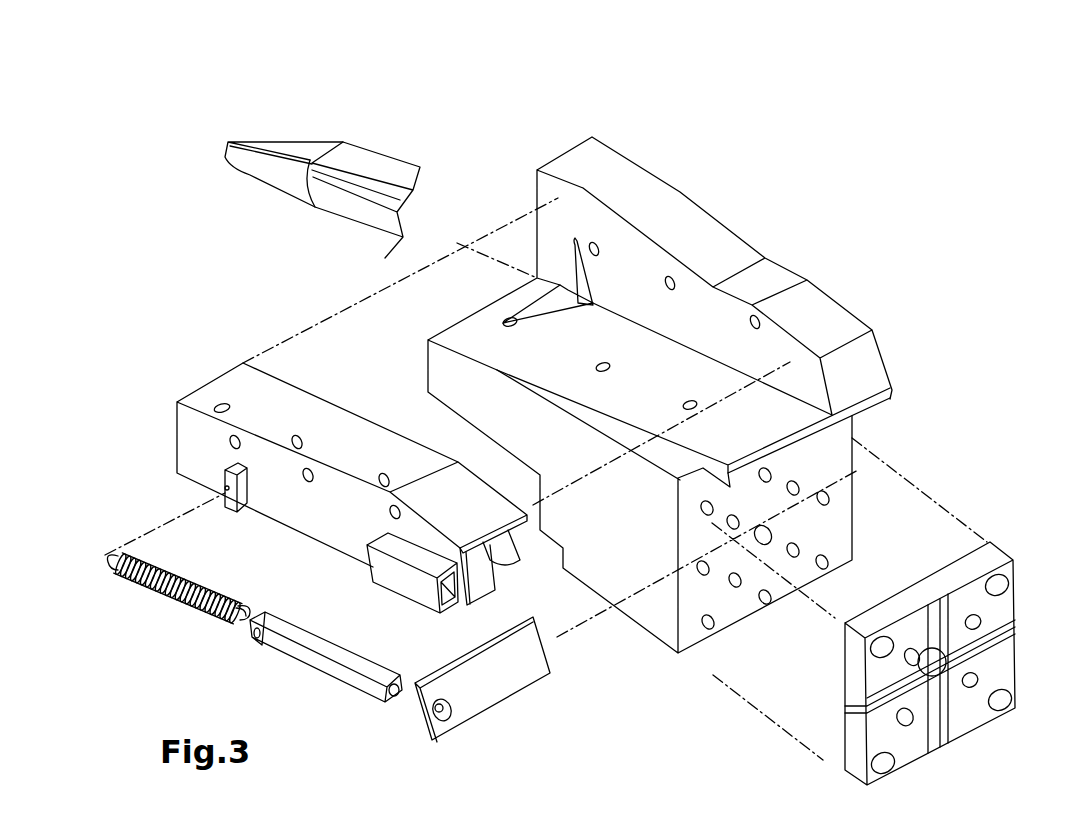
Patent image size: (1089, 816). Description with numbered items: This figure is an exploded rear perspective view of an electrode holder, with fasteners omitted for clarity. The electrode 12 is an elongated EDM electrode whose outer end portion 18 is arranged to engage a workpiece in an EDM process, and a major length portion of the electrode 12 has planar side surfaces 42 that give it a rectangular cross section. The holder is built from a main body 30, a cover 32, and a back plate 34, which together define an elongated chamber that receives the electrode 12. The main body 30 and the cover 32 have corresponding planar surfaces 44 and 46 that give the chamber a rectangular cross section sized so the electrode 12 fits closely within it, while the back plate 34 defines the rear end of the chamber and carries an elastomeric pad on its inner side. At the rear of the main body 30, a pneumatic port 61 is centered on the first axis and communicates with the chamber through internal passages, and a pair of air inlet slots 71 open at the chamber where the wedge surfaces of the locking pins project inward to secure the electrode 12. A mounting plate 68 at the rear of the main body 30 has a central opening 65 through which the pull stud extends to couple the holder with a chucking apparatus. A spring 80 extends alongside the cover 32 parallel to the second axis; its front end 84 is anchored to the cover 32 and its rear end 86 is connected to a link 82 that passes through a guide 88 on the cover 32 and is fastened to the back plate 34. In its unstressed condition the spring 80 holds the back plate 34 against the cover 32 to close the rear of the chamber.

The electrode 12 is at (370, 152).
The outer end portion 18 is at (290, 150).
The planar side surfaces 42 is at (380, 177).
The main body 30 is at (690, 220).
The planar surface 44 is at (808, 380).
The air inlet slots 71 is at (573, 259).
The pneumatic port 61 is at (768, 534).
The cover 32 is at (248, 392).
The planar surface 46 is at (488, 557).
The guide 88 is at (410, 580).
The link 82 is at (322, 663).
The back plate 34 is at (510, 677).
The spring 80 is at (148, 596).
The front end 84 is at (108, 561).
The rear end 86 is at (236, 618).
The mounting plate 68 is at (995, 555).
The central opening 65 is at (928, 680).